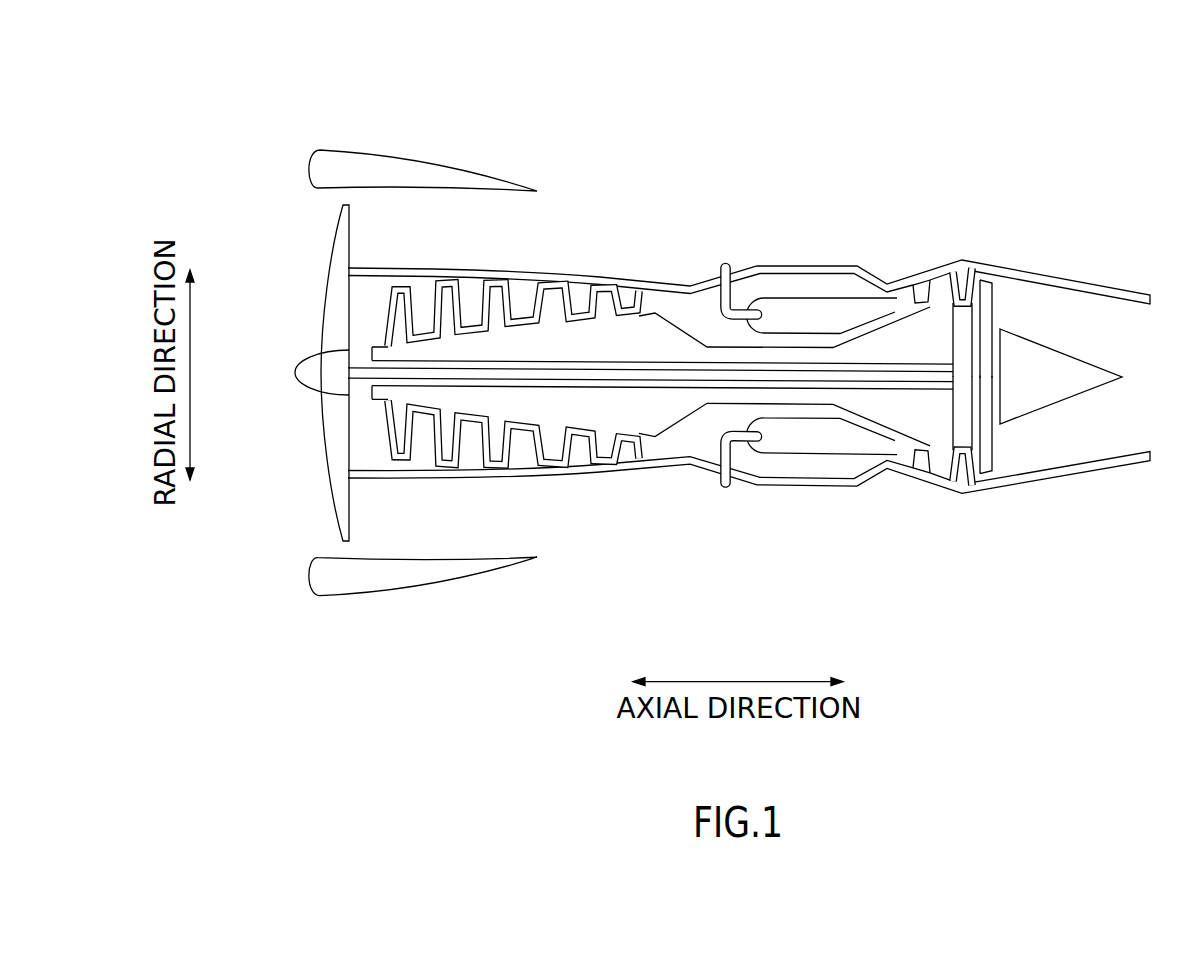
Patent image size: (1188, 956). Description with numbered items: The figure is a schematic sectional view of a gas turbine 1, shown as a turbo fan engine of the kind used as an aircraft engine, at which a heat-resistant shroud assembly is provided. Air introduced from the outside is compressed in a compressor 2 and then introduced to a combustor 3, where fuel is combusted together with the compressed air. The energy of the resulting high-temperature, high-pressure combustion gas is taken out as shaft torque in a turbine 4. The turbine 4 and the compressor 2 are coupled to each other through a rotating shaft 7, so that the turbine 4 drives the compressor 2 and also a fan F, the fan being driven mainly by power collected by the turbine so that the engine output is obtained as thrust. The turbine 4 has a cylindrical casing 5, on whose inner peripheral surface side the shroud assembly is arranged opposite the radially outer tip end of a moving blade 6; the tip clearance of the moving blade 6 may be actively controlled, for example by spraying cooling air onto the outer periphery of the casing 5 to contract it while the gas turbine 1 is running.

The gas turbine 1 is at (702, 315).
The compressor 2 is at (570, 266).
The combustor 3 is at (787, 296).
The turbine 4 is at (996, 363).
The casing 5 is at (908, 474).
The moving blade 6 is at (942, 456).
The rotating shaft 7 is at (743, 393).
The fan F is at (338, 242).